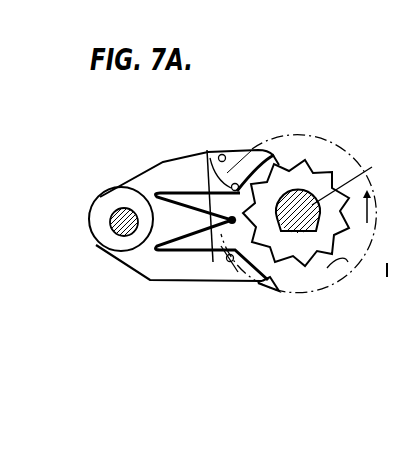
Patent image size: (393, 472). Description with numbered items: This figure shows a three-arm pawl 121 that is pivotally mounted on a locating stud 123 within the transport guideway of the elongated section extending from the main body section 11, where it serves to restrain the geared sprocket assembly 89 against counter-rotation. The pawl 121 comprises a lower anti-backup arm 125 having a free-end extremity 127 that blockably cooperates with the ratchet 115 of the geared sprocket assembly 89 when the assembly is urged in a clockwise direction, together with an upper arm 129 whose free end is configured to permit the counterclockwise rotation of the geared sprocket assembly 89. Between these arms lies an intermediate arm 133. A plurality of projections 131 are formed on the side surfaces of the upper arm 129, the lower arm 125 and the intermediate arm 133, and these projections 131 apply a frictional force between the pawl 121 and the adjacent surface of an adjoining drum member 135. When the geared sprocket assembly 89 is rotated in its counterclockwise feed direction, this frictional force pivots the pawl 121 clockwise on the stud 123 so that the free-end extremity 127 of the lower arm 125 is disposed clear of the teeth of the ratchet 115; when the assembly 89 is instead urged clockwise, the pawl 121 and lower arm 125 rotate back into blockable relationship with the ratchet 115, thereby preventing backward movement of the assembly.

The main body section 11 is at (349, 176).
The geared sprocket assembly 89 is at (349, 146).
The ratchet 115 is at (348, 262).
The three-arm pawl 121 is at (183, 155).
The locating stud 123 is at (112, 224).
The lower anti-backup arm 125 is at (230, 260).
The free-end extremity 127 is at (257, 283).
The upper arm 129 is at (262, 150).
The projections 131 is at (207, 152).
The intermediate arm 133 is at (181, 225).
The drum member 135 is at (331, 142).